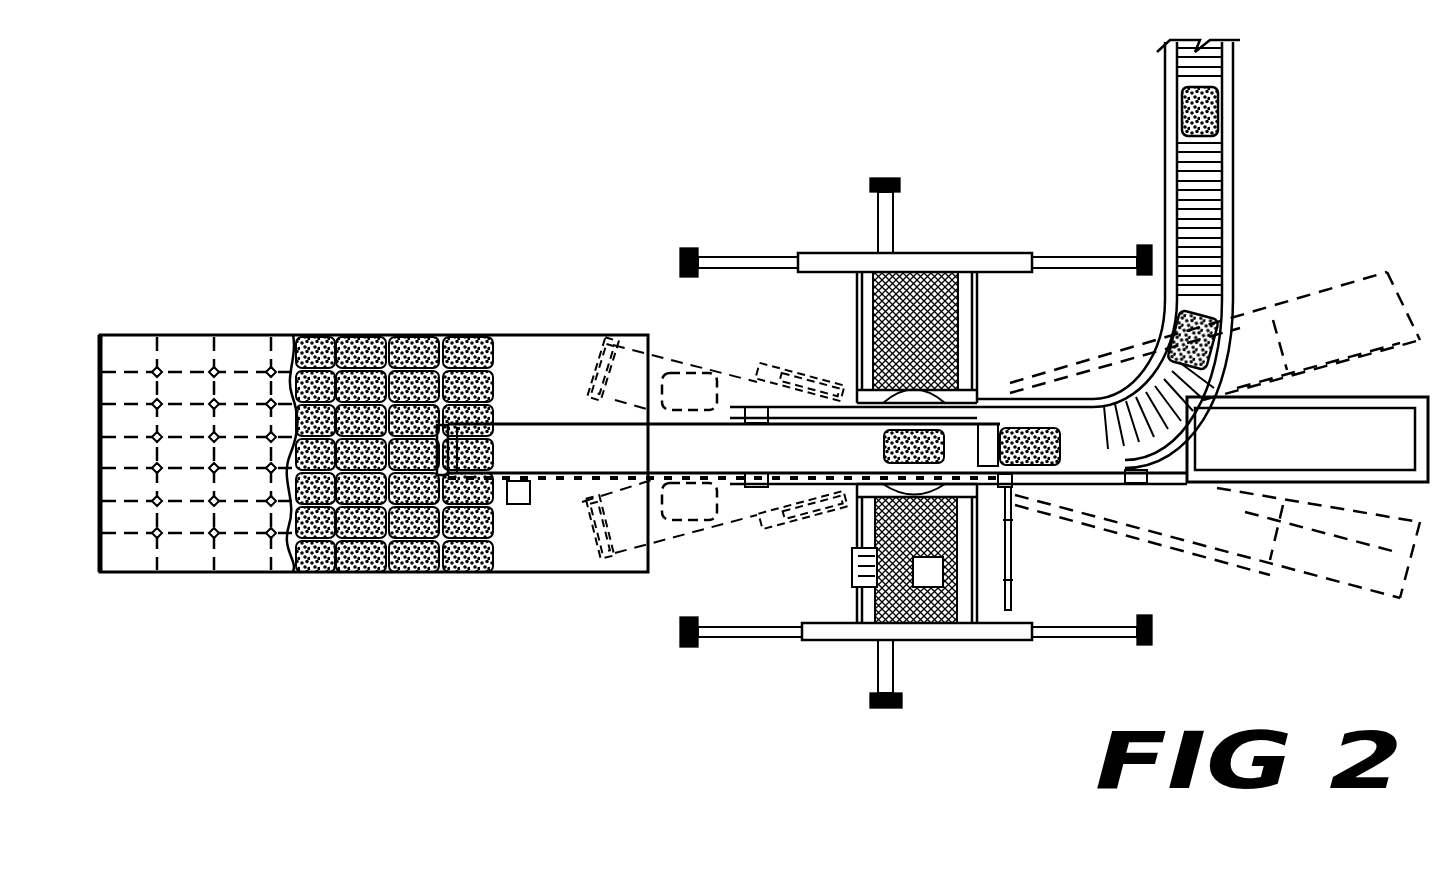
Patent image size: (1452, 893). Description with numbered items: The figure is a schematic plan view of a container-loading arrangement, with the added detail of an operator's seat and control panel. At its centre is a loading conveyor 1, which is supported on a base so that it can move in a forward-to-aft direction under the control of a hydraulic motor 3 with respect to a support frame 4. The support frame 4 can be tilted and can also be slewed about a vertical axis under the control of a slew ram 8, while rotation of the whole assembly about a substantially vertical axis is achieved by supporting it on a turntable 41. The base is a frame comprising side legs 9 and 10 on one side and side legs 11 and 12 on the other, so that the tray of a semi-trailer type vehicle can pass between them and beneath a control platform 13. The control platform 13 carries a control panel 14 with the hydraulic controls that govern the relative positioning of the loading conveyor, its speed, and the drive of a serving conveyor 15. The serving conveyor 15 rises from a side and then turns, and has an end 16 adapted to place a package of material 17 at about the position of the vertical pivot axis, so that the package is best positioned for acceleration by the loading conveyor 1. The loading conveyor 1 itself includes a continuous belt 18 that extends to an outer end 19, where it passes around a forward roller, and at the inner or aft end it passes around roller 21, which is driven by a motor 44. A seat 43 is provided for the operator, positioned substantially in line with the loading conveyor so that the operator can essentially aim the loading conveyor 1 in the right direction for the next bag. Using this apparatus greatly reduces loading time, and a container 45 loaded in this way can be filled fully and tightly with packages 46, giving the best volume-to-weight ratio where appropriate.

The loading conveyor 1 is at (548, 421).
The hydraulic motor 3 is at (752, 490).
The support frame 4 is at (1340, 410).
The slew ram 8 is at (1012, 562).
The side leg 9 is at (745, 265).
The side leg 10 is at (1068, 262).
The side leg 11 is at (765, 640).
The side leg 12 is at (1095, 640).
The control platform 13 is at (978, 330).
The control panel 14 is at (853, 575).
The serving conveyor 15 is at (1235, 200).
The end 16 is at (980, 421).
The package of material 17 is at (1085, 485).
The continuous belt 18 is at (575, 470).
The outer end 19 is at (457, 450).
The roller 21 is at (1000, 488).
The turntable 41 is at (858, 517).
The seat 43 is at (938, 625).
The motor 44 is at (1180, 418).
The container 45 is at (585, 342).
The packages 46 is at (495, 337).